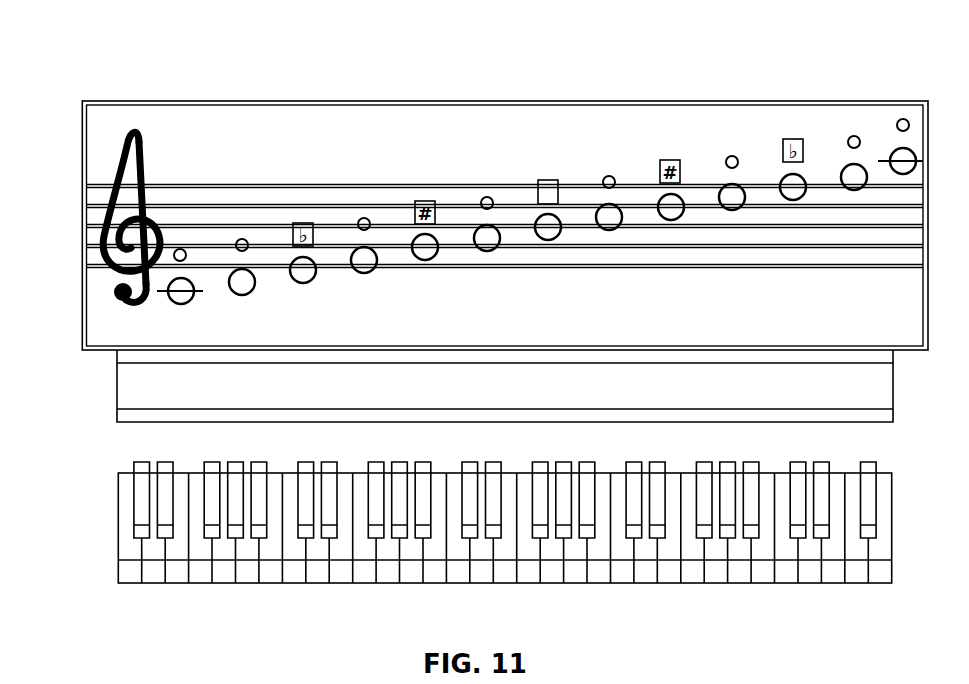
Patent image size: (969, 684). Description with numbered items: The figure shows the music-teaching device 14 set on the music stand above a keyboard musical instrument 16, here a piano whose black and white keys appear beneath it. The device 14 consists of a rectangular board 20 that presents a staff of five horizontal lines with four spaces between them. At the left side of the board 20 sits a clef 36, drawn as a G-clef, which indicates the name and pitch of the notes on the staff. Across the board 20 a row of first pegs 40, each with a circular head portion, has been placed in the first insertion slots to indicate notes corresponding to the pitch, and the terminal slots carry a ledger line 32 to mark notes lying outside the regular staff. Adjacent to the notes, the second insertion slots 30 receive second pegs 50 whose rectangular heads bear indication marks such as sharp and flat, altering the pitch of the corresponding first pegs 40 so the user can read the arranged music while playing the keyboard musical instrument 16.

The device 14 is at (768, 48).
The keyboard musical instrument 16 is at (735, 553).
The board 20 is at (332, 139).
The second insertion slots 30 is at (732, 155).
The ledger line 32 is at (200, 290).
The clef 36 is at (112, 219).
The first pegs 40 is at (550, 228).
The second pegs 50 is at (547, 180).